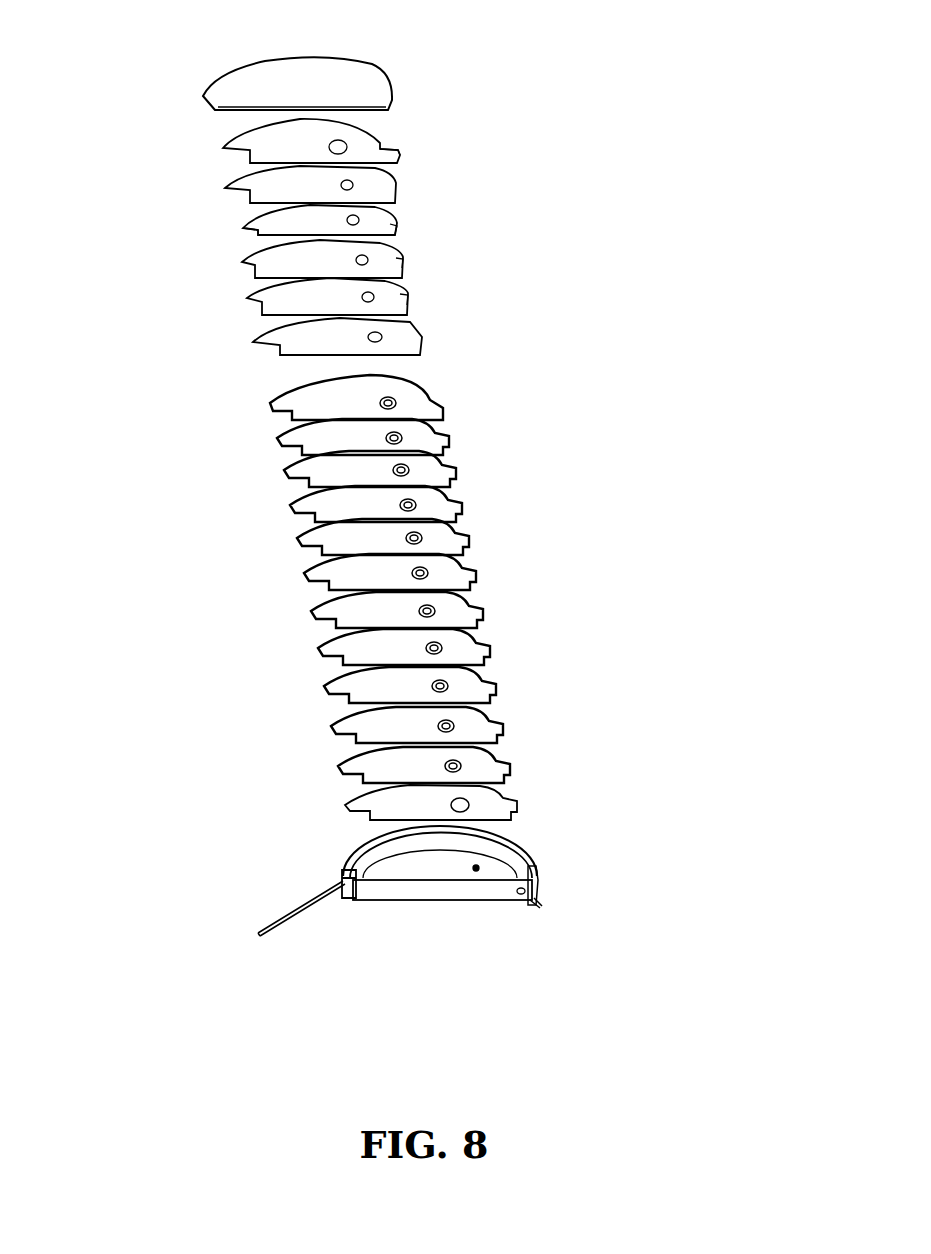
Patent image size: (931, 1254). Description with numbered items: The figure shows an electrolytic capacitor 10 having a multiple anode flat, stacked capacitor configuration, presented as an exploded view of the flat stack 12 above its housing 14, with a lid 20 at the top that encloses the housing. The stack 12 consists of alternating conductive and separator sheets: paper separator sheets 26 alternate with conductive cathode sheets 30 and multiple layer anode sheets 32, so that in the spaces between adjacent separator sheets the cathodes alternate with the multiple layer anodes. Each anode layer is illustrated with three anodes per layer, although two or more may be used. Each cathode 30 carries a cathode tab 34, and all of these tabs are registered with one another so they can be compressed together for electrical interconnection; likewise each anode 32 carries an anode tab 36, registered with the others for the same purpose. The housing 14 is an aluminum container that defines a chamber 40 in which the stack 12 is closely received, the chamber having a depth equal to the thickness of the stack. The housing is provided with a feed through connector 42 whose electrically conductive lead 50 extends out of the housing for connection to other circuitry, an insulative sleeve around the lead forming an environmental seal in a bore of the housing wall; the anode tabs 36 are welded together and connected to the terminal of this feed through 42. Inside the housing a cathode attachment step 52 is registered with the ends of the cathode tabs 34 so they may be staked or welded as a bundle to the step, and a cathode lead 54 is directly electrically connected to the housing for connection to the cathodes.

The capacitor 10 is at (540, 898).
The flat stack 12 is at (537, 821).
The housing 14 is at (495, 959).
The lid 20 is at (207, 66).
The paper separator sheets 26 is at (222, 260).
The cathode sheets 30 is at (211, 131).
The multiple layer anode sheets 32 is at (514, 251).
The cathode tab 34 is at (509, 116).
The anode tab 36 is at (199, 219).
The chamber 40 is at (490, 821).
The feed through connector 42 is at (189, 821).
The electrically conductive lead 50 is at (183, 888).
The cathode attachment step 52 is at (577, 867).
The cathode lead 54 is at (584, 940).